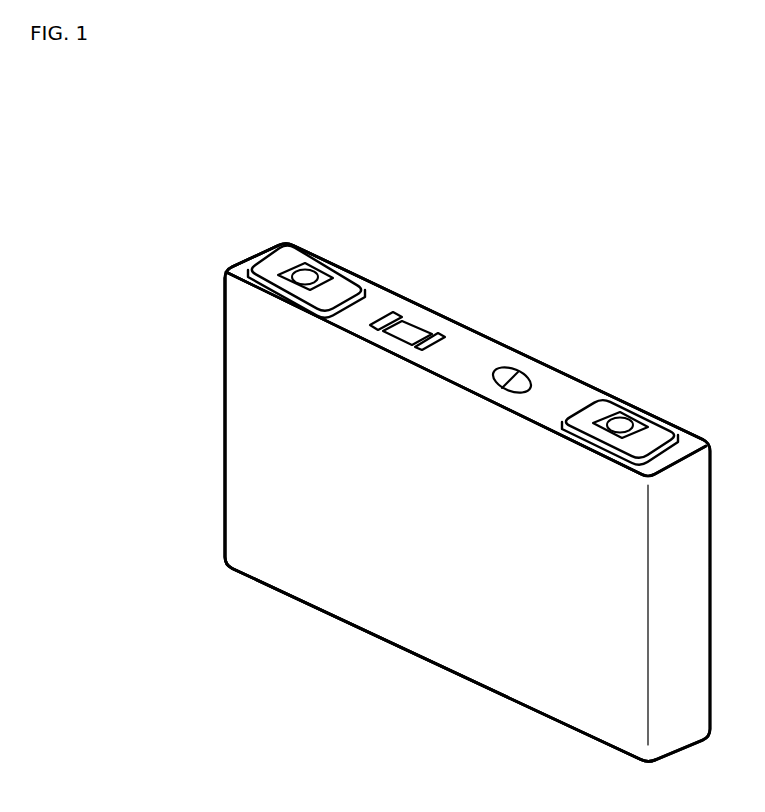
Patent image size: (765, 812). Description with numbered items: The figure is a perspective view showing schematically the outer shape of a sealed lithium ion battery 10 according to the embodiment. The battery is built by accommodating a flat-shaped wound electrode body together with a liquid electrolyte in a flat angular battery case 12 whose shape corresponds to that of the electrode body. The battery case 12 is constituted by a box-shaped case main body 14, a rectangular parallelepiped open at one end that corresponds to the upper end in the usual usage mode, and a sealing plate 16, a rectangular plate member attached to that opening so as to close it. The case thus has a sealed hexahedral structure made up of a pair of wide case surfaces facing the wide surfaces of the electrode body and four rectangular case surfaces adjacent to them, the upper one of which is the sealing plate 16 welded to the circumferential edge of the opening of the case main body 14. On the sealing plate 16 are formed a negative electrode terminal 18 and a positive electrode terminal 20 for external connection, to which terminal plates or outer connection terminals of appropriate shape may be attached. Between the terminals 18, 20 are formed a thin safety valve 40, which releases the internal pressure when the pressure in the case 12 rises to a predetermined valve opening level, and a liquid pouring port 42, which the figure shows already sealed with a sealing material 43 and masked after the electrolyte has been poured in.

The lithium ion battery 10 is at (670, 228).
The battery case 12 is at (495, 627).
The case main body 14 is at (380, 615).
The sealing plate 16 is at (477, 340).
The negative electrode terminal 18 is at (305, 278).
The positive electrode terminal 20 is at (618, 422).
The safety valve 40 is at (523, 382).
The liquid pouring port 42 is at (423, 328).
The sealing material 43 is at (410, 326).